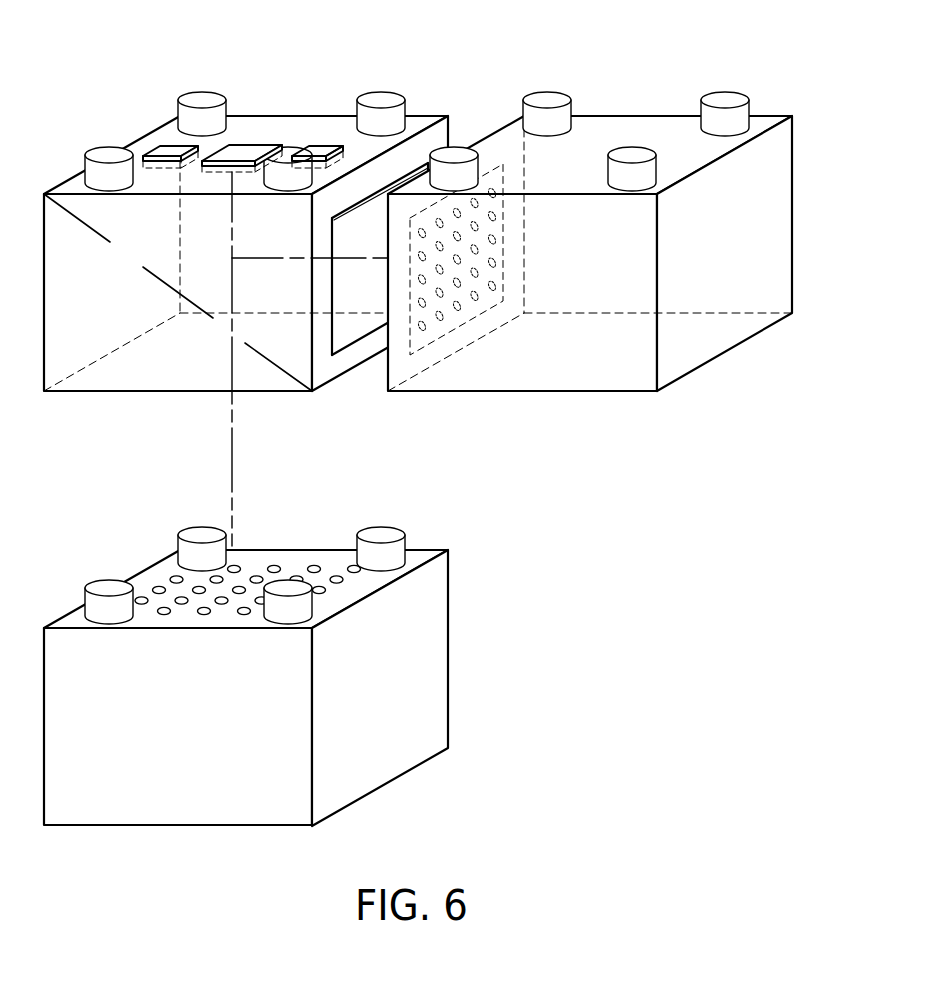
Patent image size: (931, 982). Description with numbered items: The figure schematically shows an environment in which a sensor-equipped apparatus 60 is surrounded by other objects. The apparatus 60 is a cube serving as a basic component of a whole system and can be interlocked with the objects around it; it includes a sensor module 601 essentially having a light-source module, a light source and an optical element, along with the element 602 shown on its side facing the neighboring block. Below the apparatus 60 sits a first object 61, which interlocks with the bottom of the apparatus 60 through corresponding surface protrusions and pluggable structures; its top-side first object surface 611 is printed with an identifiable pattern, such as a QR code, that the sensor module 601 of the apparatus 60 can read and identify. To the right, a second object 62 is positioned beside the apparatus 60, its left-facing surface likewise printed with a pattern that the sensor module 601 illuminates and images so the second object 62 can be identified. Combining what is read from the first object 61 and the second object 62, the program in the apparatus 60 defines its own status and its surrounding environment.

The apparatus 60 is at (261, 297).
The sensor module 601 is at (320, 148).
The connector plate with pin holes 602 is at (492, 148).
The first object 61 is at (262, 650).
The first object surface 611 is at (292, 558).
The second object 62 is at (610, 213).